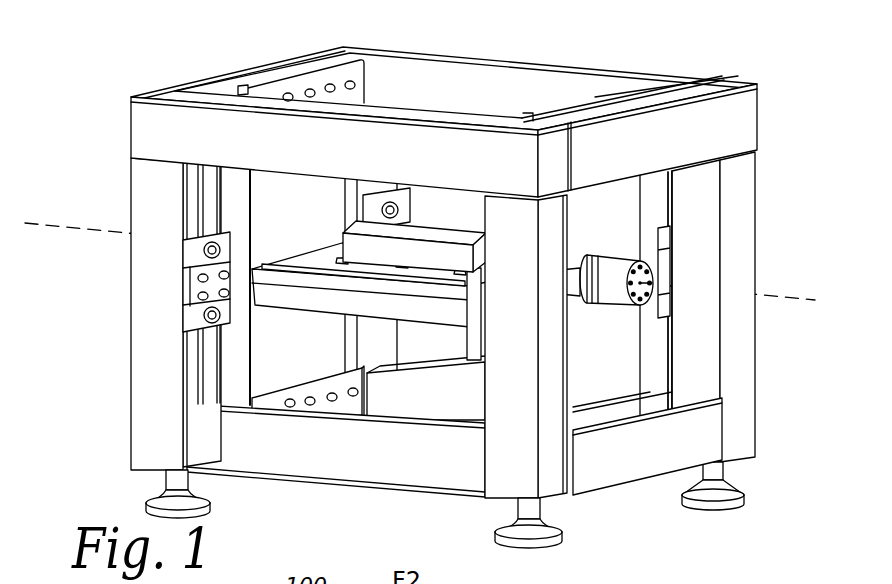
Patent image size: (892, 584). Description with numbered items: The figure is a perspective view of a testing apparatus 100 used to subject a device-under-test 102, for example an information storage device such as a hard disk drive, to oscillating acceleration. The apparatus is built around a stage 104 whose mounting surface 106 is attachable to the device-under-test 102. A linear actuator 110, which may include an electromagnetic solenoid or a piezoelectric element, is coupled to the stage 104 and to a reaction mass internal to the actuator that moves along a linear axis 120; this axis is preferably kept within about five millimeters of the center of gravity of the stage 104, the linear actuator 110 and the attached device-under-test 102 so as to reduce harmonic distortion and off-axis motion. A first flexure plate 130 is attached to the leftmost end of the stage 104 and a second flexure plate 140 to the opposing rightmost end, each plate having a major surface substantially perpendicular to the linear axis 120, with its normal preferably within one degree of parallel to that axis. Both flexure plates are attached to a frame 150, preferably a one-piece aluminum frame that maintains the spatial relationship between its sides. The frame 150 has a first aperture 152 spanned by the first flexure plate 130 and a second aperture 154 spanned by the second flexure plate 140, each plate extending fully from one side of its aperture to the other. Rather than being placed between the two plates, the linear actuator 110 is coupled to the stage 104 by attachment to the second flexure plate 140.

The testing apparatus 100 is at (678, 63).
The device-under-test 102 is at (443, 237).
The stage 104 is at (275, 291).
The mounting surface 106 is at (298, 257).
The linear actuator 110 is at (612, 268).
The linear axis 120 is at (781, 300).
The first flexure plate 130 is at (267, 360).
The second flexure plate 140 is at (587, 387).
The frame 150 is at (472, 98).
The first aperture 152 is at (222, 205).
The second aperture 154 is at (655, 352).